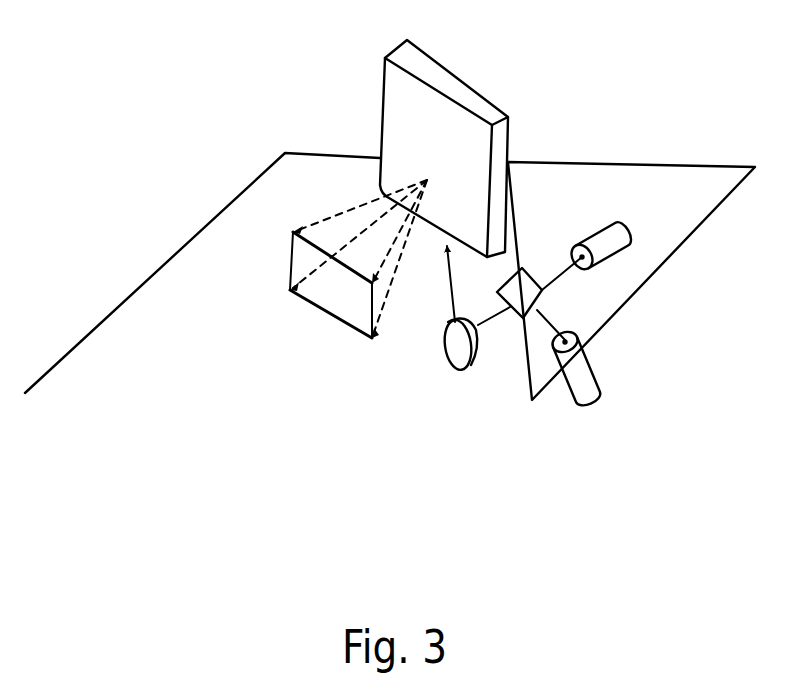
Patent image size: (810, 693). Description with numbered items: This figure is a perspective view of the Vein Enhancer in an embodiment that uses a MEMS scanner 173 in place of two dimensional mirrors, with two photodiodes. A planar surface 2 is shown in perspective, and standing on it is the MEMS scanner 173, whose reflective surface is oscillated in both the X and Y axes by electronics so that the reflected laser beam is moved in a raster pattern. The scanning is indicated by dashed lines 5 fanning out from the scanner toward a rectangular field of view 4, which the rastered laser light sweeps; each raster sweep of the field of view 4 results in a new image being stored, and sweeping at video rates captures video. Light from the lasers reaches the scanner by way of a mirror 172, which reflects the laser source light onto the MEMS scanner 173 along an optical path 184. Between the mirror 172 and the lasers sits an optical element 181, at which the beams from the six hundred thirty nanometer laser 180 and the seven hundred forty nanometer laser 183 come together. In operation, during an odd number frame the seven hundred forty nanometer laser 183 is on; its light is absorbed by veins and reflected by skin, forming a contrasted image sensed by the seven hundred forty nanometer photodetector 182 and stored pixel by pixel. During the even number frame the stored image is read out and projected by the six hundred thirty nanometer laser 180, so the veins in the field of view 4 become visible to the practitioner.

The object/work surface 2 is at (125, 182).
The field of view 4 is at (287, 270).
The projection beams 5 is at (352, 207).
The mirror 172 is at (477, 365).
The MEMS scanner 173 is at (507, 222).
The 630 nm laser 180 is at (617, 257).
The beam splitter 181 is at (550, 302).
The 740 nm photodetector 182 is at (480, 88).
The 740 nm laser 183 is at (598, 370).
The optical path 184 is at (487, 328).